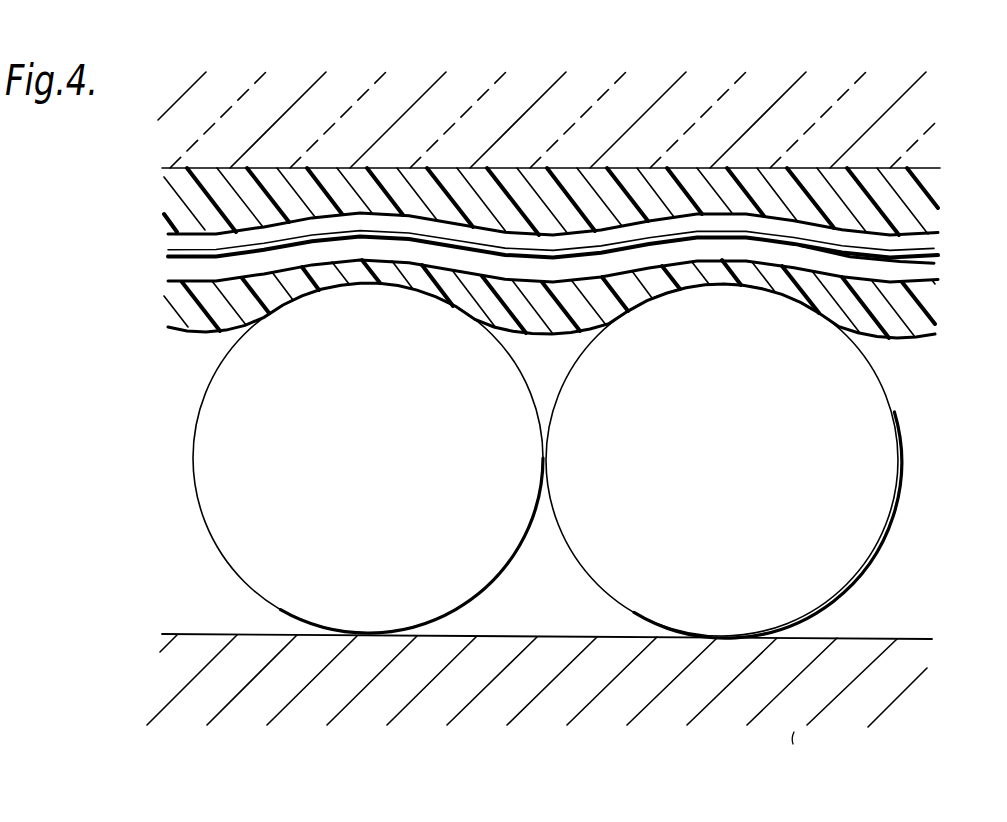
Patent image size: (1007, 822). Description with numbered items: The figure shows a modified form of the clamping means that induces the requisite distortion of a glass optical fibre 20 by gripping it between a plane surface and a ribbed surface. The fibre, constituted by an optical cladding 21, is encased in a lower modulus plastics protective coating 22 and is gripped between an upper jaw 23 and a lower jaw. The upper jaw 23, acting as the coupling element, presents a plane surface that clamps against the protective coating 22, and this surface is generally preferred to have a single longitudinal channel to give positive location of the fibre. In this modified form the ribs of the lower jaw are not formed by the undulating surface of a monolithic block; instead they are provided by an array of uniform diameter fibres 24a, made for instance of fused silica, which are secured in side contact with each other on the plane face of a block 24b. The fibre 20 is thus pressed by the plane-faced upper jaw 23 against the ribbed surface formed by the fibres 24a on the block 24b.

The optical fibre 20 is at (170, 251).
The optical cladding 21 is at (920, 243).
The protective coating 22 is at (178, 200).
The upper jaw 23 is at (307, 113).
The uniform diameter fibres 24a is at (198, 458).
The block 24b is at (877, 667).